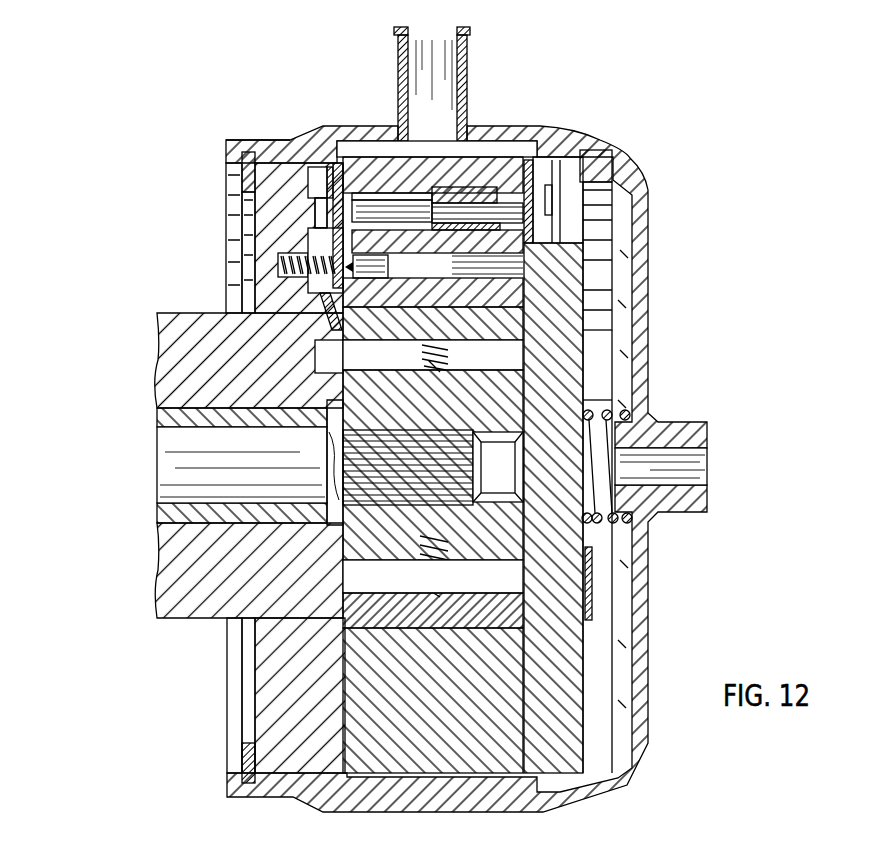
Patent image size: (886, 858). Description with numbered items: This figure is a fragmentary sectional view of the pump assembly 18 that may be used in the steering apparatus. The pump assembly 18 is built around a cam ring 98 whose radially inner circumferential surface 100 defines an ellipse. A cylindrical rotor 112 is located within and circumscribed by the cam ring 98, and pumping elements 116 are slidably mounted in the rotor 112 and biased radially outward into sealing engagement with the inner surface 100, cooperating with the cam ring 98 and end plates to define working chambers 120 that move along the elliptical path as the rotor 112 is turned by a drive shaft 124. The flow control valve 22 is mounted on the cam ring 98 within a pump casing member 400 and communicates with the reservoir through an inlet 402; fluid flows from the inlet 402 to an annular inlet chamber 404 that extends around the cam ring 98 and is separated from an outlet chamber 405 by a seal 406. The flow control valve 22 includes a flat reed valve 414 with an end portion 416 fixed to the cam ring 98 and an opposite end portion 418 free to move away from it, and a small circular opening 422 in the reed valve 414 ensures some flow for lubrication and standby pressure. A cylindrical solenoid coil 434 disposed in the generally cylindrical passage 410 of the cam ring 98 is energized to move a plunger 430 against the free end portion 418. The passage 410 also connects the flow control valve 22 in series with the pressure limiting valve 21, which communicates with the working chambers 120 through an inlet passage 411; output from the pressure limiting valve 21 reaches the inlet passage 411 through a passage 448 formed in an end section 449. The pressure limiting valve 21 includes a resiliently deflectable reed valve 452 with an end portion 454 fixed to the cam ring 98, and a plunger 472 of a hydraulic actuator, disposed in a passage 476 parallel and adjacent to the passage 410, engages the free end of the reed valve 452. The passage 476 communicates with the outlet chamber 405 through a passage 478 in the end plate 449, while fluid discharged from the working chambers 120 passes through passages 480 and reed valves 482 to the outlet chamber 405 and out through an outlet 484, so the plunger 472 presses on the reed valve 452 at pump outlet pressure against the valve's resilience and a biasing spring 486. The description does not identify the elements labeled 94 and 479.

The pump assembly 18 is at (264, 102).
The pressure limiting valve 21 is at (318, 212).
The flow control valve 22 is at (575, 190).
The pin 94 is at (384, 295).
The cam ring 98 is at (462, 158).
The radially inner circumferential surface 100 is at (453, 317).
The cylindrical rotor 112 is at (370, 535).
The pumping elements 116 is at (513, 325).
The working chambers 120 is at (360, 573).
The drive shaft 124 is at (208, 460).
The pump casing member 400 is at (643, 730).
The inlet 402 is at (398, 67).
The annular inlet chamber 404 is at (515, 148).
The outlet chamber 405 is at (600, 363).
The seal 406 is at (573, 158).
The passage 410 is at (393, 200).
The inlet passage 411 is at (323, 357).
The flat reed valve 414 is at (585, 205).
The end portion 416 is at (580, 247).
The opposite end portion 418 is at (537, 197).
The small circular opening 422 is at (552, 200).
The plunger 430 is at (450, 203).
The cylindrical solenoid coil 434 is at (455, 232).
The passage 448 is at (323, 315).
The end section 449 is at (267, 228).
The resiliently deflectable reed valve 452 is at (318, 188).
The end portion 454 is at (333, 160).
The plunger 472 is at (380, 253).
The passage 476 is at (488, 272).
The passage 478 is at (563, 270).
The surface 479 is at (560, 407).
The passages 480 is at (575, 596).
The reed valves 482 is at (593, 563).
The outlet 484 is at (680, 507).
The biasing spring 486 is at (290, 247).